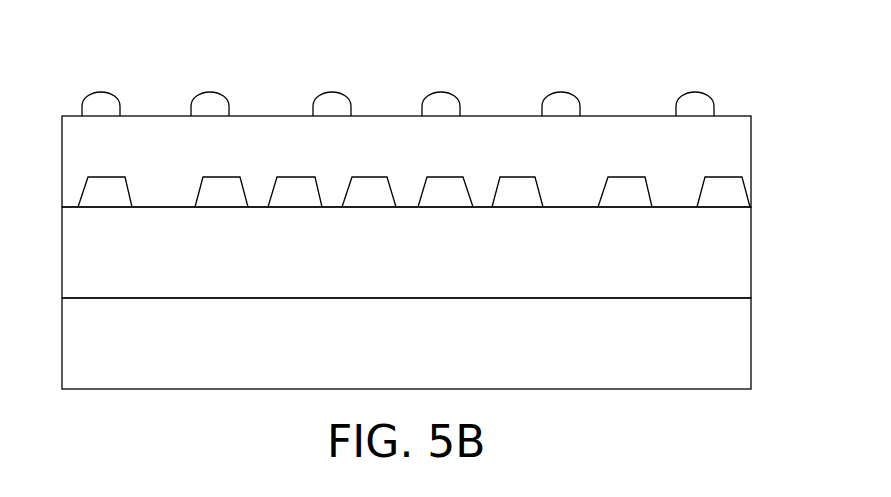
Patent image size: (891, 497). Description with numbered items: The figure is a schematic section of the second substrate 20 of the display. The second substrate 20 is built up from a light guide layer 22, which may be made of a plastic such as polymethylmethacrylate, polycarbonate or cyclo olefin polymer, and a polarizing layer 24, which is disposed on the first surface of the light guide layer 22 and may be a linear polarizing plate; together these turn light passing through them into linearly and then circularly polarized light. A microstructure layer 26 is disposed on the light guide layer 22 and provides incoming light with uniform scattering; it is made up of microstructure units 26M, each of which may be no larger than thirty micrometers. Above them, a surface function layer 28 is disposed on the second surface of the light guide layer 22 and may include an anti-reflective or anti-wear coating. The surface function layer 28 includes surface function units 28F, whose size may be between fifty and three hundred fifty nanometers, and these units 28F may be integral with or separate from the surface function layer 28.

The second substrate 20 is at (437, 298).
The light guide layer 22 is at (420, 268).
The polarizing layer 24 is at (420, 358).
The microstructure layer 26 is at (479, 192).
The microstructure unit 26M is at (725, 191).
The surface function layer 28 is at (420, 164).
The surface function unit 28F is at (694, 103).